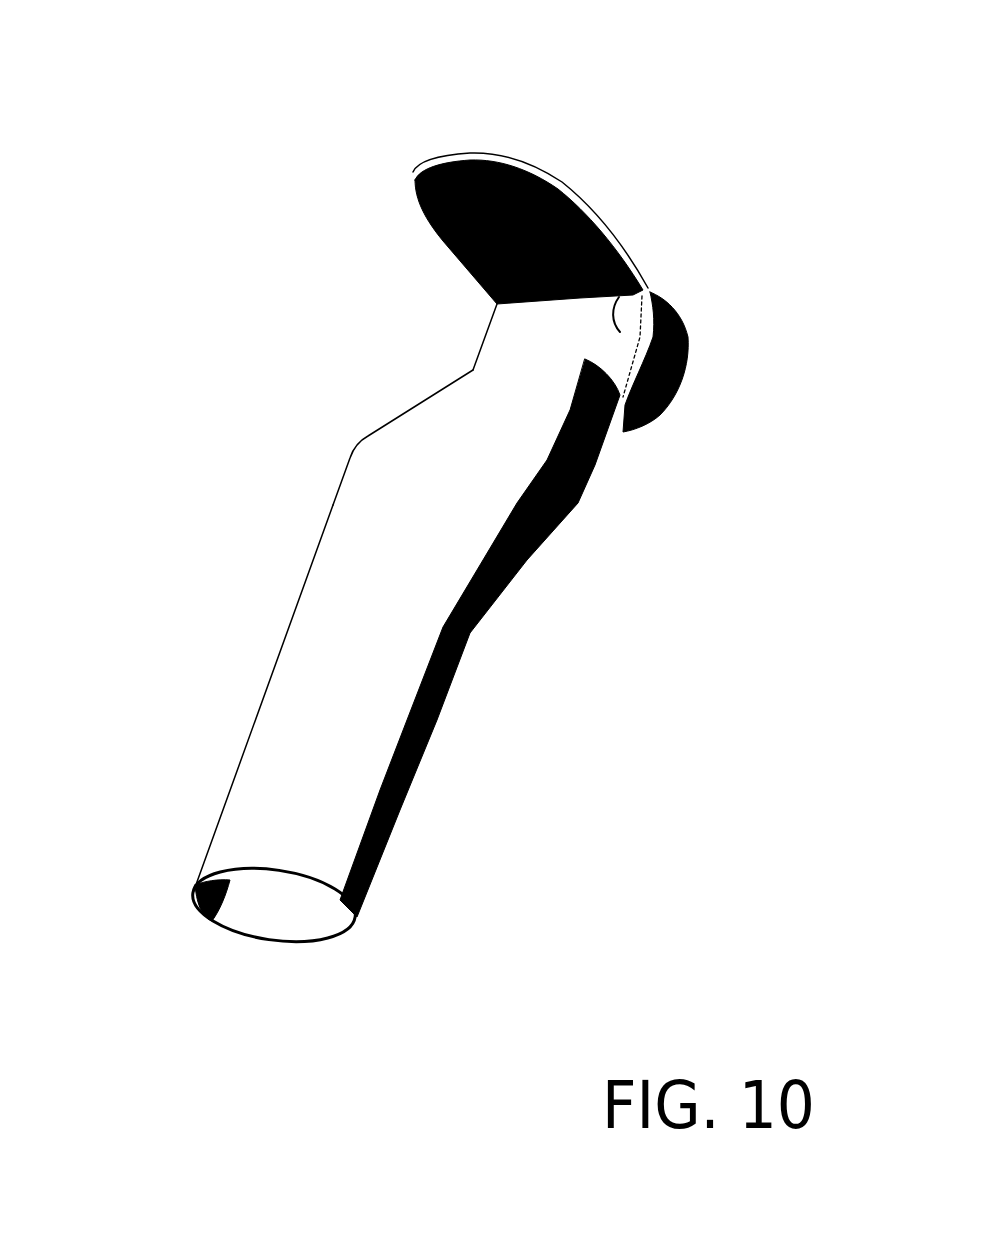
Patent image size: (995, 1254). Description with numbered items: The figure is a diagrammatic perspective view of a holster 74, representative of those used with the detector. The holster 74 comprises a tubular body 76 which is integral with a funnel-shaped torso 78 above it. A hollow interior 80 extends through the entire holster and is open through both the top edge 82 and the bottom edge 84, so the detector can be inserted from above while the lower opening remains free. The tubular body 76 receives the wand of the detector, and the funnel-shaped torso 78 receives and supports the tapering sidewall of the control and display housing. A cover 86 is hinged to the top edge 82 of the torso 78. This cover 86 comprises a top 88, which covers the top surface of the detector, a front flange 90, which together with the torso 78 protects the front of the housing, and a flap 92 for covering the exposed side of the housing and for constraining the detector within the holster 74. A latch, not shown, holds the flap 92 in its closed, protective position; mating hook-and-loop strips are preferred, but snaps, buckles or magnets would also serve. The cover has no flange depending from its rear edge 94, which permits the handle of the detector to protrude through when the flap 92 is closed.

The holster 74 is at (240, 338).
The tubular body 76 is at (320, 678).
The funnel-shaped torso 78 is at (507, 504).
The hollow interior 80 is at (275, 900).
The top edge 82 is at (433, 393).
The bottom edge 84 is at (275, 947).
The cover 86 is at (582, 174).
The top 88 is at (641, 273).
The front flange 90 is at (663, 383).
The flap 92 is at (413, 205).
The rear edge 94 is at (480, 335).